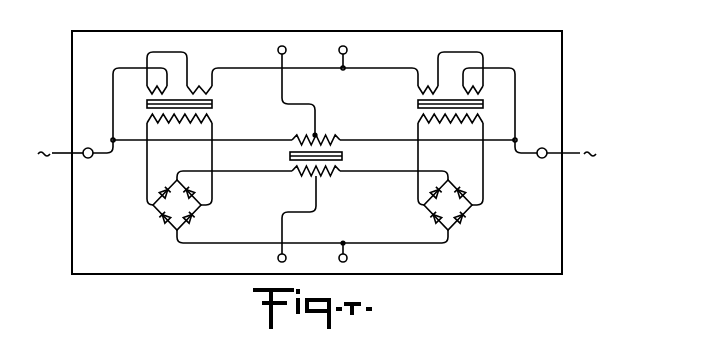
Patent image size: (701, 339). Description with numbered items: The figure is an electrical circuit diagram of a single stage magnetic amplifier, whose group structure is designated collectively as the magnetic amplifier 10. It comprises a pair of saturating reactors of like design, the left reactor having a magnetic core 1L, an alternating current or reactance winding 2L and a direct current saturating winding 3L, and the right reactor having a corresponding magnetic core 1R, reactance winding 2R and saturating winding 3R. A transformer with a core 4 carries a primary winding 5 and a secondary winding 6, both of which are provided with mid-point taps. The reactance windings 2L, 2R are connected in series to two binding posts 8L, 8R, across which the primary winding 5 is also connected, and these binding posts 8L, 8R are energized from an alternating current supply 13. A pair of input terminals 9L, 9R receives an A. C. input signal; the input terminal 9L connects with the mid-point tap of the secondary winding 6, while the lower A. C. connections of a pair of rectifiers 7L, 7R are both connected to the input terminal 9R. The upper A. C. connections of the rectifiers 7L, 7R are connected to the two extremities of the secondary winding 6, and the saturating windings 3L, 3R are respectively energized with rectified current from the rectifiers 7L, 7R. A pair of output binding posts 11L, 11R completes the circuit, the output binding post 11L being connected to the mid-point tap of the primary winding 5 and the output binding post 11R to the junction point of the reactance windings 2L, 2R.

The single stage magnetic amplifier 10 is at (620, 62).
The alternating current supply 13 is at (319, 143).
The binding post 8L is at (86, 165).
The binding post 8R is at (536, 165).
The magnetic core 1L is at (165, 107).
The magnetic core 1R is at (462, 107).
The alternating current or reactance winding 2L is at (265, 88).
The alternating current or reactance winding 2R is at (466, 88).
The direct current saturating winding 3L is at (179, 159).
The direct current saturating winding 3R is at (450, 159).
The output binding post 11L is at (280, 89).
The output binding post 11R is at (362, 56).
The primary winding 5 is at (316, 131).
The transformer core 4 is at (324, 158).
The secondary winding 6 is at (312, 210).
The rectifier 7L is at (288, 207).
The rectifier 7R is at (458, 204).
The input terminal 9L is at (264, 259).
The input terminal 9R is at (357, 254).